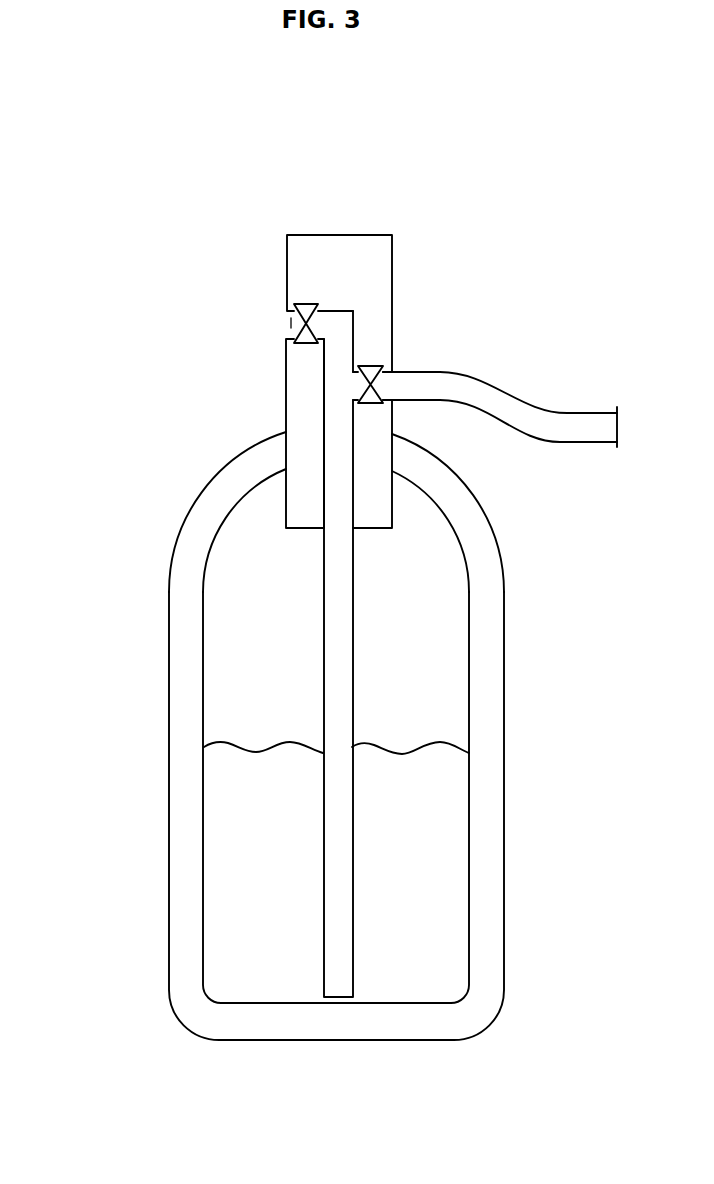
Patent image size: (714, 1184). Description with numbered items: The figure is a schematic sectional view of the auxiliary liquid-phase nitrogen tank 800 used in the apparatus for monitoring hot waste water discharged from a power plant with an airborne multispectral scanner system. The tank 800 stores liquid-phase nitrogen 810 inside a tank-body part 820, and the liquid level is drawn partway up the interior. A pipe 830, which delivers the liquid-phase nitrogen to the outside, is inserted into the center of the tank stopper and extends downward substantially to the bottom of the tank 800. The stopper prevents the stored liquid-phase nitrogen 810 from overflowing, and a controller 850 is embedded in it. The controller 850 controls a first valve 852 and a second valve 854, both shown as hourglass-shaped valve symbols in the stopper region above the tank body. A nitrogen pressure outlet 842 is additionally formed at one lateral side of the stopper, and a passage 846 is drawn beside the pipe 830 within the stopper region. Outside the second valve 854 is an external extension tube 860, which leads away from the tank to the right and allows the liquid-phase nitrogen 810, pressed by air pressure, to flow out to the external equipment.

The auxiliary liquid-phase nitrogen tank 800 is at (137, 639).
The liquid-phase nitrogen 810 is at (440, 866).
The tank-body part 820 is at (185, 864).
The pipe 830 is at (323, 961).
The nitrogen pressure outlet 842 is at (291, 323).
The inlet chamber 846 is at (298, 396).
The controller 850 is at (385, 281).
The first valve 852 is at (303, 304).
The second valve 854 is at (377, 365).
The external extension tube 860 is at (583, 425).